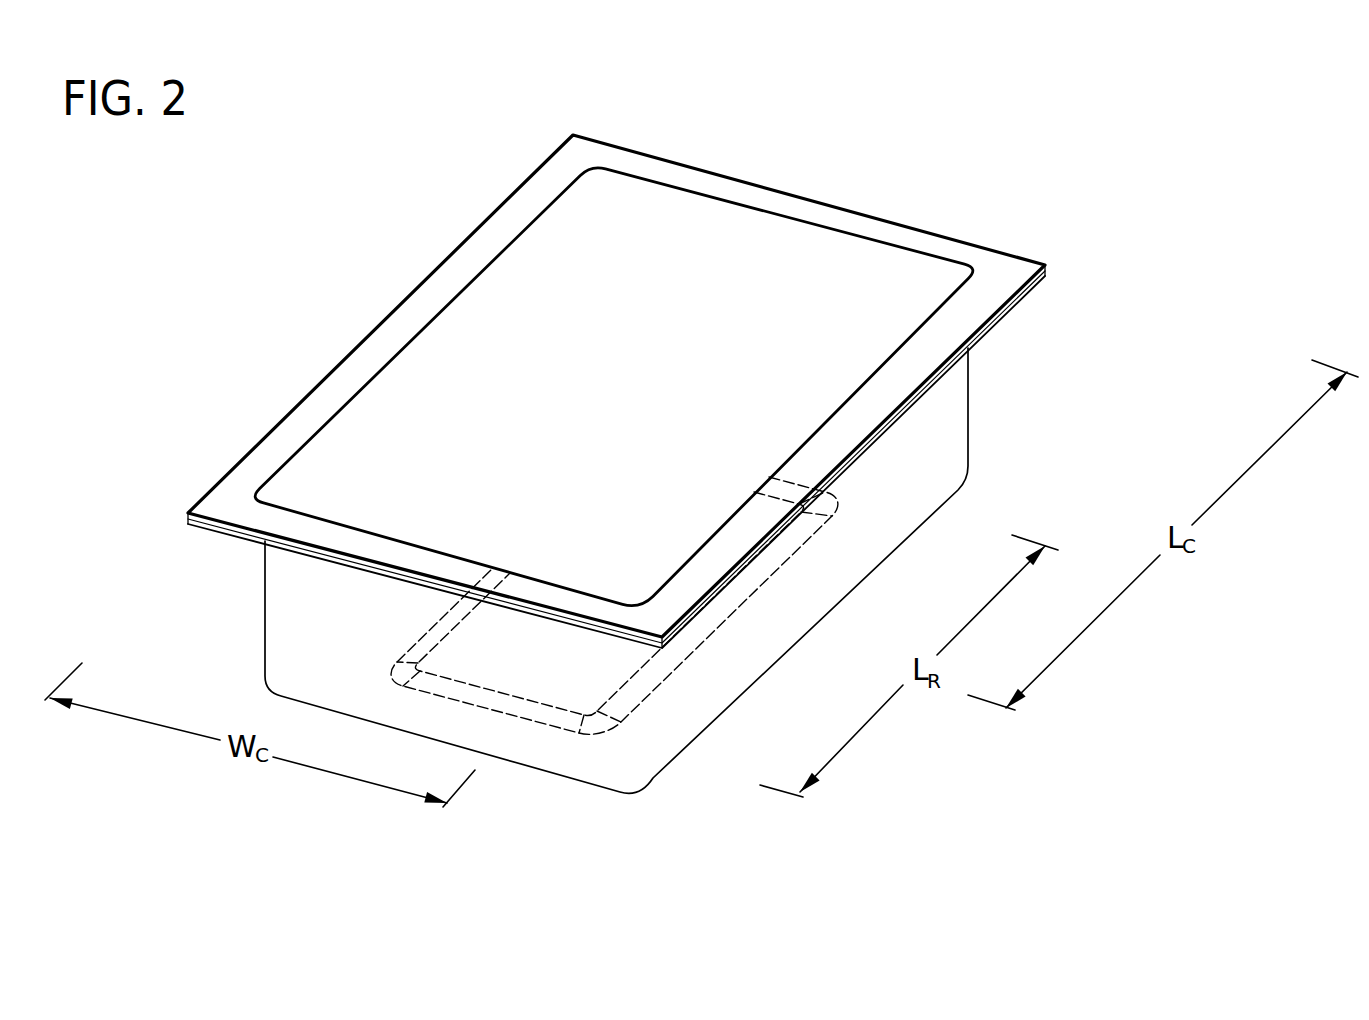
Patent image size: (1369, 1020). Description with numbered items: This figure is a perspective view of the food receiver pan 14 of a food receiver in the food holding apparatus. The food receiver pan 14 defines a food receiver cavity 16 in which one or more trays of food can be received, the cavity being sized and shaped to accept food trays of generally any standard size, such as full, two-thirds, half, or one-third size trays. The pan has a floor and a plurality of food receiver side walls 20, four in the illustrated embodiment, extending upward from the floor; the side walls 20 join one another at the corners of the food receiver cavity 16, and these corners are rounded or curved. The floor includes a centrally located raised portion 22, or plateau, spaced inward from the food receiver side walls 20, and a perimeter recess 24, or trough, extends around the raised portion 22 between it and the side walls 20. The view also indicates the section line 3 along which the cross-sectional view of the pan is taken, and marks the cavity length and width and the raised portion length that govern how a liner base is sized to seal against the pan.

The food receiver pan 14 is at (850, 140).
The food receiver cavity 16 is at (790, 347).
The food receiver side walls 20 is at (502, 327).
The raised portion 22 is at (652, 537).
The perimeter recess 24 is at (622, 431).
The section line indicator for FIG. 3 is at (283, 337).